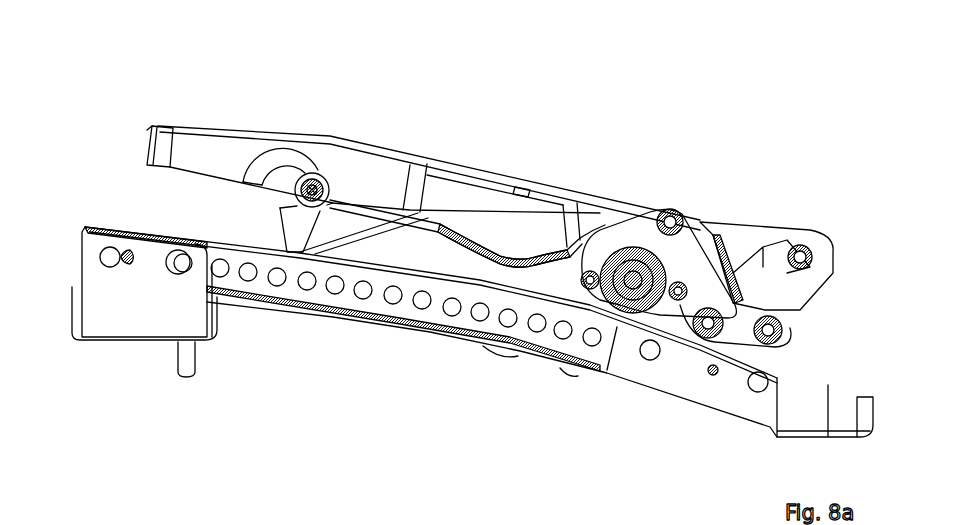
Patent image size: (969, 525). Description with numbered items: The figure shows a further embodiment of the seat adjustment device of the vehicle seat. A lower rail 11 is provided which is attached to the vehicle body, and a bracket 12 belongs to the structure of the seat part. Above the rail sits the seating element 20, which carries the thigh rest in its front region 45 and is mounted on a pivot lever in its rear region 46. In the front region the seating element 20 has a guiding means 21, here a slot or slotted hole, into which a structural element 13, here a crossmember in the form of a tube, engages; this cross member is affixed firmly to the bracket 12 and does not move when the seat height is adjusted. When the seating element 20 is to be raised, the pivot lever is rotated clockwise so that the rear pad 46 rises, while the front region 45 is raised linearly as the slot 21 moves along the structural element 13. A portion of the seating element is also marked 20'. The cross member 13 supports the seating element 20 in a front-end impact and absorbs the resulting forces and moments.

The lower rail 11 is at (447, 320).
The bracket 12 is at (293, 230).
The structural element 13 is at (306, 172).
The seating element 20 is at (423, 158).
The upper rail portion 20' is at (503, 172).
The guiding means 21 is at (320, 187).
The front region 45 is at (190, 110).
The rear region 46 is at (760, 208).